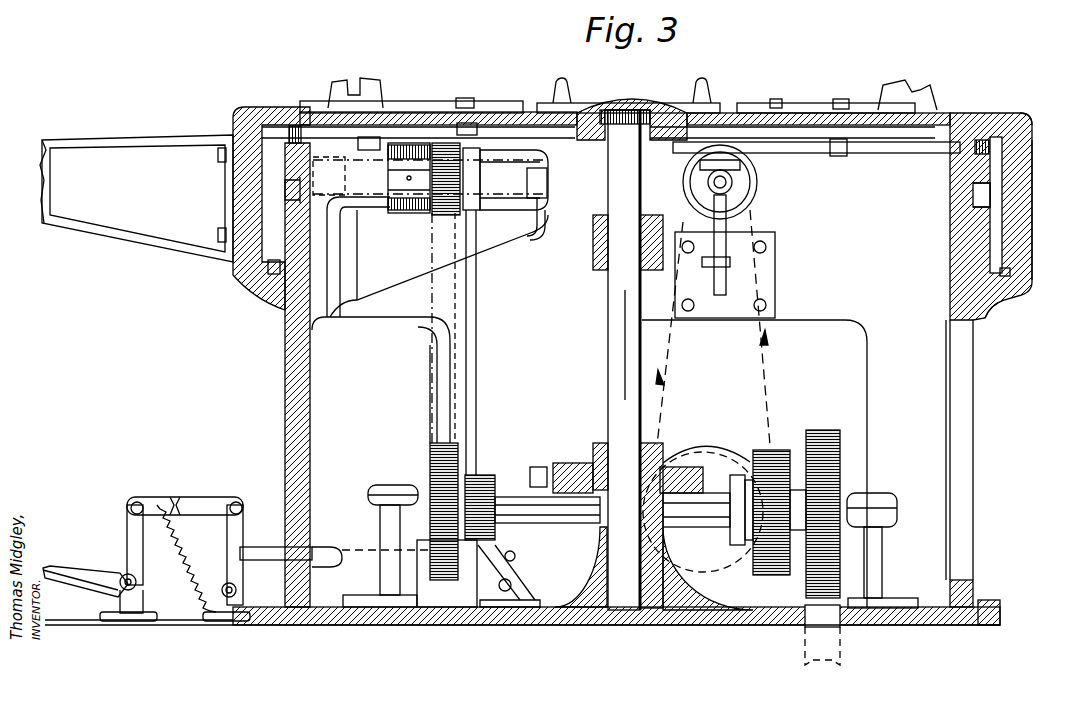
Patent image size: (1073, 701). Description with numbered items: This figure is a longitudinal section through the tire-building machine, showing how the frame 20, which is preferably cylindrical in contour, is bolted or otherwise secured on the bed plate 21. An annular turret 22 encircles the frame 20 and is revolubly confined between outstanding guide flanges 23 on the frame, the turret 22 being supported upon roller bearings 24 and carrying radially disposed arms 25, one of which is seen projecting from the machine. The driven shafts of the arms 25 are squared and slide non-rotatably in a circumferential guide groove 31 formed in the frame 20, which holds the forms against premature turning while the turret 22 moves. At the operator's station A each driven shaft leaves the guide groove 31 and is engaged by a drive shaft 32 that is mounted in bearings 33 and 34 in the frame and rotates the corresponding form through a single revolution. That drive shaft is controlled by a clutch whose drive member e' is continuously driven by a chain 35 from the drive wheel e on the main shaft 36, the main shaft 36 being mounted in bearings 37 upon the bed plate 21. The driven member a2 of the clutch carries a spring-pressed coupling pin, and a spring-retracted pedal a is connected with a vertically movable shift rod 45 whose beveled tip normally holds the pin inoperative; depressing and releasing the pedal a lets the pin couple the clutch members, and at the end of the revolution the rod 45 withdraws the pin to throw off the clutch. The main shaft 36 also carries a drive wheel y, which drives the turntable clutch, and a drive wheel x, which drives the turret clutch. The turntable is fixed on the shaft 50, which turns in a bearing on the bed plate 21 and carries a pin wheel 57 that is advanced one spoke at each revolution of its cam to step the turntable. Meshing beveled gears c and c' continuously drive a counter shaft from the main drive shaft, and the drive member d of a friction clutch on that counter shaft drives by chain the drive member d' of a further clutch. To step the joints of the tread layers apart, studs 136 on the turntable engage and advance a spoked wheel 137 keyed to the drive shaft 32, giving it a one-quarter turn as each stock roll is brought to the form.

The frame 20 is at (950, 287).
The bed plate 21 is at (920, 607).
The annular turret 22 is at (1040, 210).
The guide flanges 23 is at (985, 112).
The roller bearings 24 is at (1000, 272).
The arms 25 is at (150, 141).
The circumferential guide groove 31 is at (276, 175).
The drive shaft 32 is at (318, 108).
The bearing 33 is at (365, 205).
The bearing 34 is at (548, 212).
The chain 35 is at (425, 370).
The main shaft 36 is at (538, 467).
The bearings 37 is at (395, 485).
The shift rod 45 is at (477, 366).
The turntable shaft 50 is at (610, 366).
The pin wheel 57 is at (575, 463).
The studs 136 is at (415, 143).
The spoked wheel 137 is at (443, 112).
The operator's station A is at (170, 554).
The pedal a is at (90, 575).
The driven member a2 is at (500, 212).
The beveled gear c is at (695, 520).
The beveled gear c' is at (739, 527).
The drive member d is at (501, 488).
The drive member d' is at (721, 295).
The drive wheel e is at (431, 506).
The drive member e' is at (443, 327).
The drive wheel x is at (485, 478).
The drive wheel y is at (770, 452).